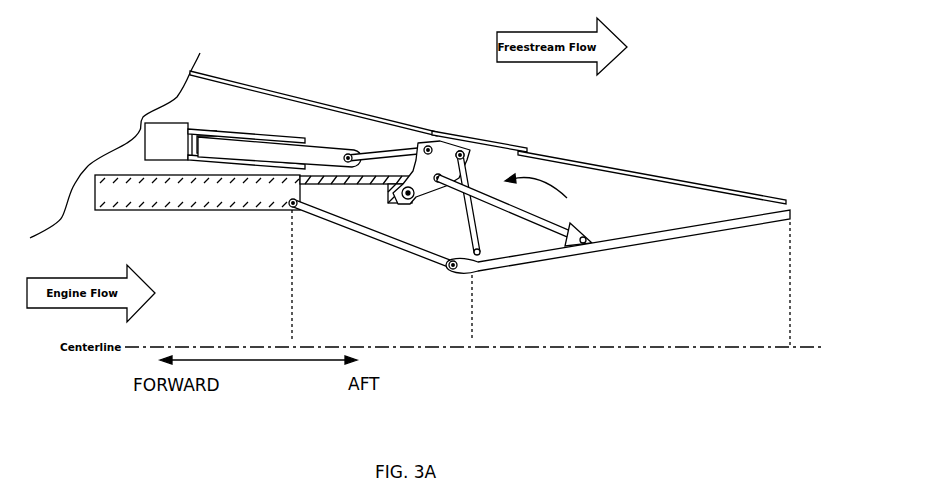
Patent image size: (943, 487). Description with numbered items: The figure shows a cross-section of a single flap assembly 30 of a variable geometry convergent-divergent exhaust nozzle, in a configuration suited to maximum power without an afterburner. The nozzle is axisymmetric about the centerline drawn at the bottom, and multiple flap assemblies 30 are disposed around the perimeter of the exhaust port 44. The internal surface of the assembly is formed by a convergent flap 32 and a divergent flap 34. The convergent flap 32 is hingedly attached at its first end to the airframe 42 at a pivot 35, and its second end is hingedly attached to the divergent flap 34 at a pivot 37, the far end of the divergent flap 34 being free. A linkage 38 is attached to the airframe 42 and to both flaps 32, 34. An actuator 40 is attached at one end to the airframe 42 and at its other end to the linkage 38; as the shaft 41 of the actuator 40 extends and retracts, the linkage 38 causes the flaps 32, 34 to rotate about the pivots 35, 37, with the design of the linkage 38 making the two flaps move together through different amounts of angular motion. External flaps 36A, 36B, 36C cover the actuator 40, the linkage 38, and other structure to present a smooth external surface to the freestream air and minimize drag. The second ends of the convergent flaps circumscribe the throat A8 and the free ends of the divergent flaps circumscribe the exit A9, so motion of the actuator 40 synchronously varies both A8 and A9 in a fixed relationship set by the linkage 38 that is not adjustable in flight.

The flap assembly 30 is at (458, 64).
The convergent flap 32 is at (384, 248).
The divergent flap 34 is at (605, 259).
The pivot 35 is at (296, 210).
The external flap 36A is at (353, 108).
The external flap 36B is at (477, 140).
The external flap 36C is at (600, 167).
The pivot 37 is at (453, 272).
The linkage 38 is at (552, 194).
The actuator 40 is at (173, 123).
The shaft 41 is at (325, 153).
The airframe 42 is at (143, 187).
The exhaust port 44 is at (290, 285).
The throat A8 is at (489, 307).
The exit A9 is at (806, 283).